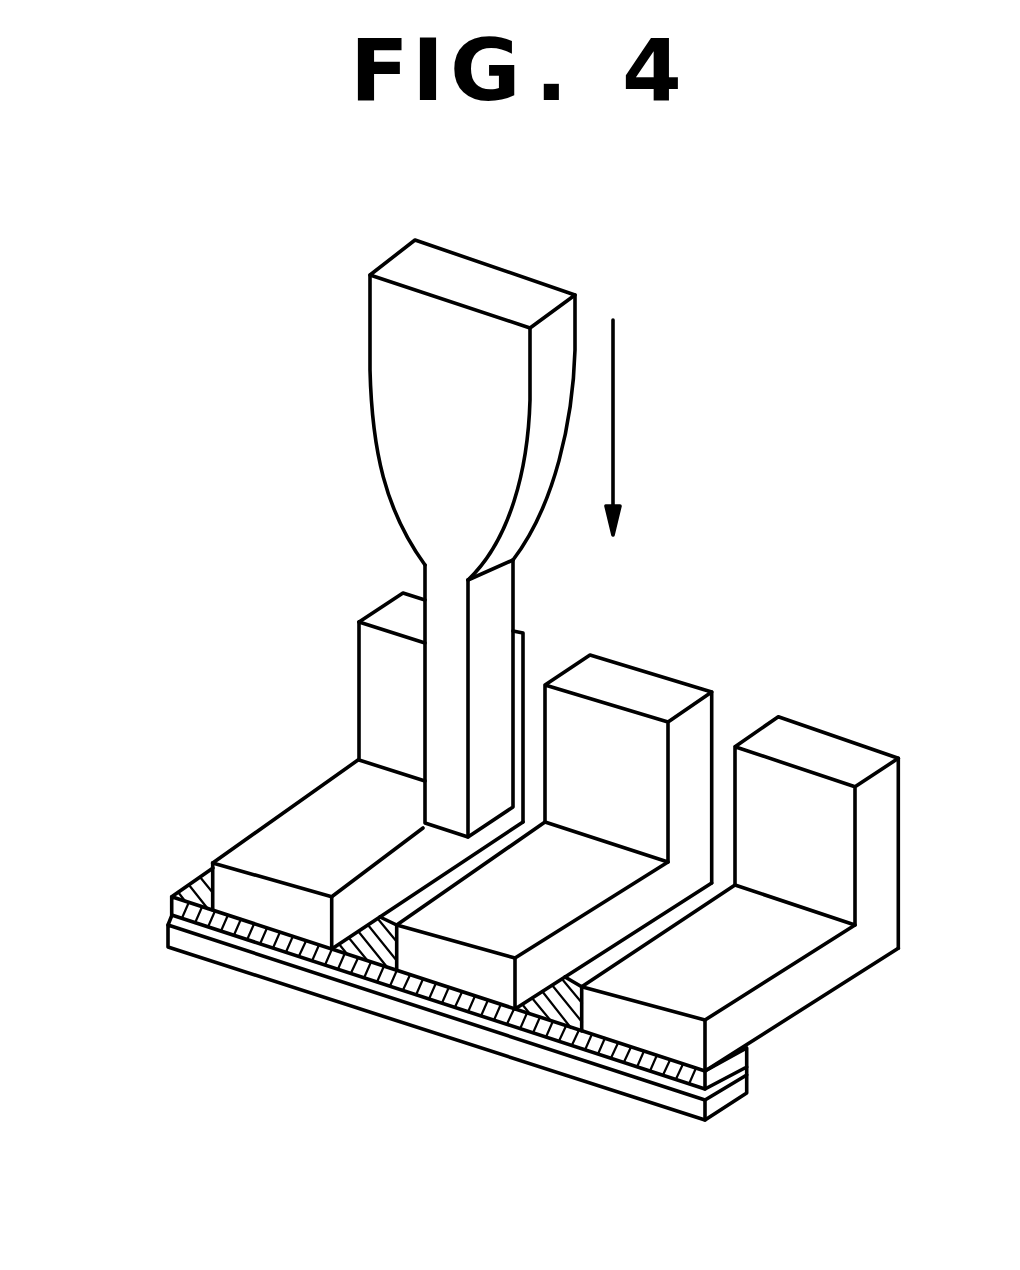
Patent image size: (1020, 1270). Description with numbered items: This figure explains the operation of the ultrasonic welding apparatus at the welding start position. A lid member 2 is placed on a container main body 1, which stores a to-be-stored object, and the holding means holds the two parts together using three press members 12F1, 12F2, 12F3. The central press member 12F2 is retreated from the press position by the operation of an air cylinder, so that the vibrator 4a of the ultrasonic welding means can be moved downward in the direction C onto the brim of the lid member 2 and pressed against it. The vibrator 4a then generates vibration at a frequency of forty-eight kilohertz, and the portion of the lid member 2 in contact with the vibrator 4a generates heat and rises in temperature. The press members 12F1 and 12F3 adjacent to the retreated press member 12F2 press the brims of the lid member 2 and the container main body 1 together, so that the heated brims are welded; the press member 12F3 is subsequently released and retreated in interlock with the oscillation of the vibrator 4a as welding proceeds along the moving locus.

The vibrator 4a is at (385, 382).
The pressing direction C is at (635, 427).
The press member 12F1 is at (270, 917).
The press member 12F2 is at (457, 978).
The press member 12F3 is at (648, 1042).
The lid member 2 is at (172, 905).
The container main body 1 is at (172, 940).